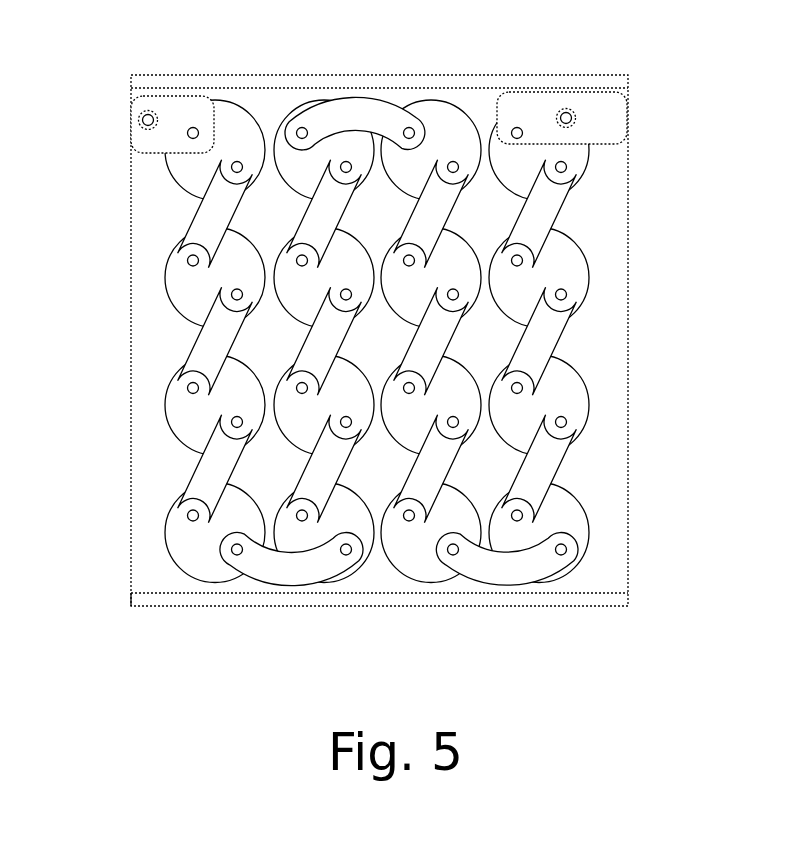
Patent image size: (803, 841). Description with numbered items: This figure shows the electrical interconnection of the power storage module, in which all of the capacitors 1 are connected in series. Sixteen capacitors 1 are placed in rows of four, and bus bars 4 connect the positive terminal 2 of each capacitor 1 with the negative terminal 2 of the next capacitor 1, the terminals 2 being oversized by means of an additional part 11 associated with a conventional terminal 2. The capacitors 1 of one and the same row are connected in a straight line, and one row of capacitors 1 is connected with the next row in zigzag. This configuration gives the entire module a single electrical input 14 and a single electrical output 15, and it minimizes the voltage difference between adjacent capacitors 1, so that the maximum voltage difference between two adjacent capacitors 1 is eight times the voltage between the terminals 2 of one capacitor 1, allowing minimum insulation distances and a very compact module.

The capacitor 1 is at (198, 292).
The terminal 2 is at (240, 143).
The bus bar 4 is at (512, 573).
The additional part 11 is at (587, 600).
The electrical input 14 is at (605, 132).
The electrical output 15 is at (143, 140).